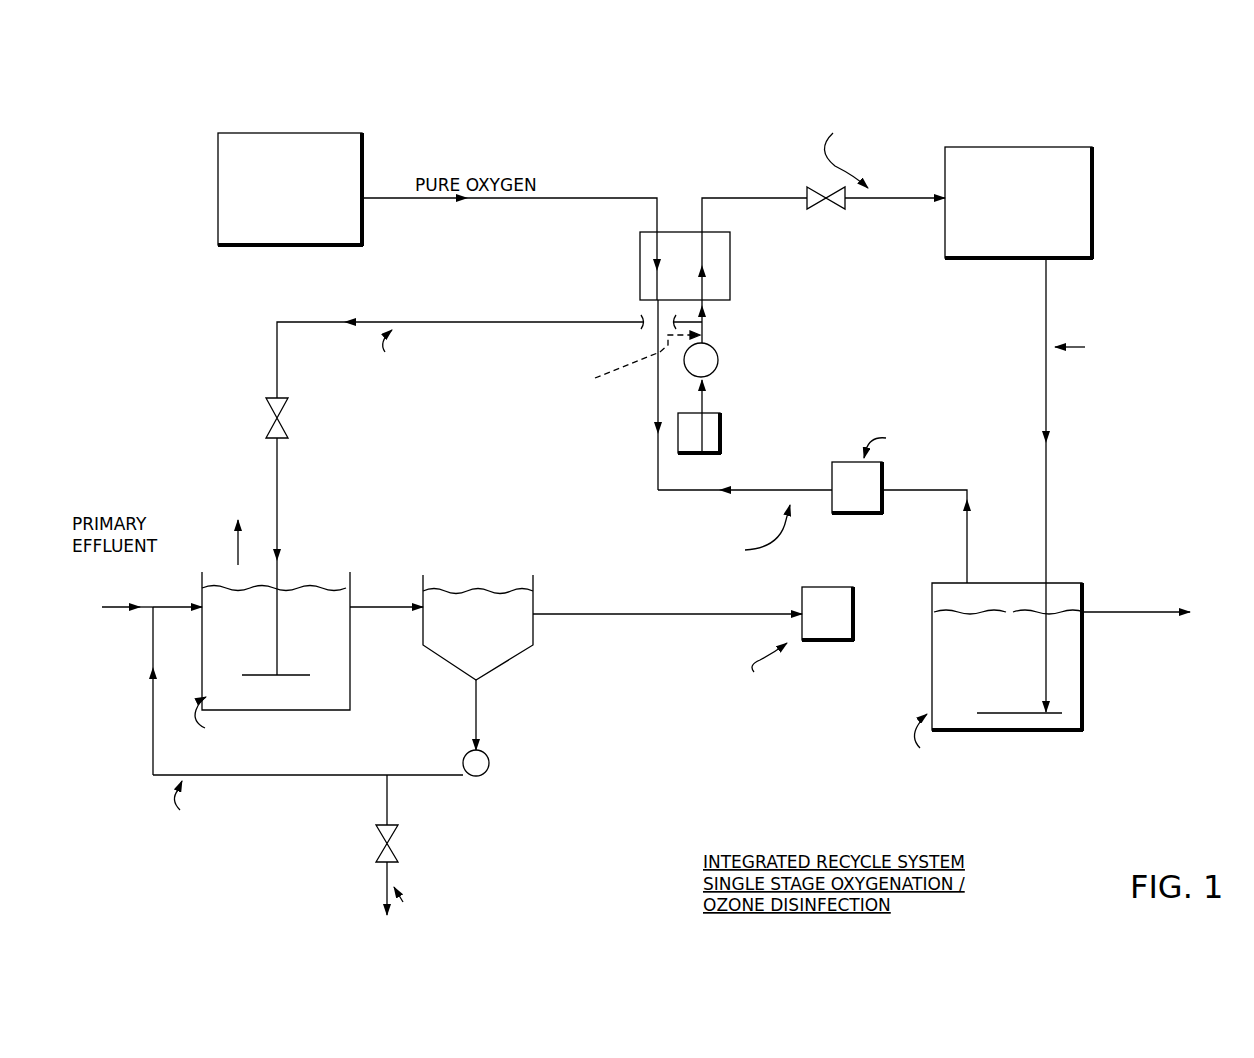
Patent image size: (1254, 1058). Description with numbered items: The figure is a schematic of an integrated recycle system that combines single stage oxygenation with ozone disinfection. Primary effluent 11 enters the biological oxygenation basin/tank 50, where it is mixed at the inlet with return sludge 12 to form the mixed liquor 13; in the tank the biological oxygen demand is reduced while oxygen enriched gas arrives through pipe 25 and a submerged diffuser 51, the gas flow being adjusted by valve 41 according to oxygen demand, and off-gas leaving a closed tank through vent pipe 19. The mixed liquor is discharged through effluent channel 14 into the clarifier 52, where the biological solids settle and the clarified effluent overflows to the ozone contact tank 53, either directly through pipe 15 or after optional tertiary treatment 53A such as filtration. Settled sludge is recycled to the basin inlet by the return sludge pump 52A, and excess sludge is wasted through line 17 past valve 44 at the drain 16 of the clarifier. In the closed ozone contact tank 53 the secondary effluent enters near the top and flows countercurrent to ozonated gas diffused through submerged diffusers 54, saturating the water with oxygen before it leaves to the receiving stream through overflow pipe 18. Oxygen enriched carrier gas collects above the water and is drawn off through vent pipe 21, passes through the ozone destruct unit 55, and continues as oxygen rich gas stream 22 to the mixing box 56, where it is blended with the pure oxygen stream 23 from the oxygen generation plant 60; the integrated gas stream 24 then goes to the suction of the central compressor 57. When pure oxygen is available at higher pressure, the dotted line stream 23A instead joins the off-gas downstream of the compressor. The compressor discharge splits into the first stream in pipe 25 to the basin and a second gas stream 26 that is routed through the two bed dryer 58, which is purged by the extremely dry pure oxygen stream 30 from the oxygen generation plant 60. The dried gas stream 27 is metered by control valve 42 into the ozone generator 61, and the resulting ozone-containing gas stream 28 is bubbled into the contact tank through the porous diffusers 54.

The primary effluent 11 is at (121, 605).
The return sludge 12 is at (151, 715).
The mixed liquor 13 is at (177, 602).
The effluent channel 14 is at (378, 604).
The pipe 15 is at (731, 598).
The clarifier sludge outlet line 16 is at (478, 735).
The line 17 is at (389, 800).
The overflow pipe 18 is at (1112, 612).
The vent pipe 19 is at (235, 546).
The vent pipe 21 is at (970, 542).
The oxygen rich gas stream 22 is at (742, 492).
The pure oxygen stream 23 is at (656, 406).
The dotted line pure oxygen stream 23A is at (631, 360).
The integrated gas stream 24 is at (705, 402).
The pipe 25 is at (505, 323).
The gas stream 26 is at (709, 312).
The dried gas stream 27 is at (719, 199).
The gas stream 28 is at (1050, 491).
The extremely dry pure oxygen stream 30 is at (657, 199).
The valve 41 is at (290, 424).
The control valve 42 is at (824, 208).
The waste sludge valve 44 is at (395, 848).
The biological oxygenation basin/tank 50 is at (345, 623).
The submerged diffuser 51 is at (312, 674).
The clarifier 52 is at (514, 652).
The return sludge pump 52A is at (500, 765).
The ozone contact tank 53 is at (937, 630).
The tertiary treatment 53A is at (803, 647).
The submerged diffusers 54 is at (1016, 713).
The ozone destruct unit 55 is at (906, 470).
The mixing box 56 is at (757, 429).
The central compressor 57 is at (769, 360).
The dryer 58 is at (734, 266).
The oxygen generation plant 60 is at (290, 189).
The ozone generator 61 is at (1019, 203).